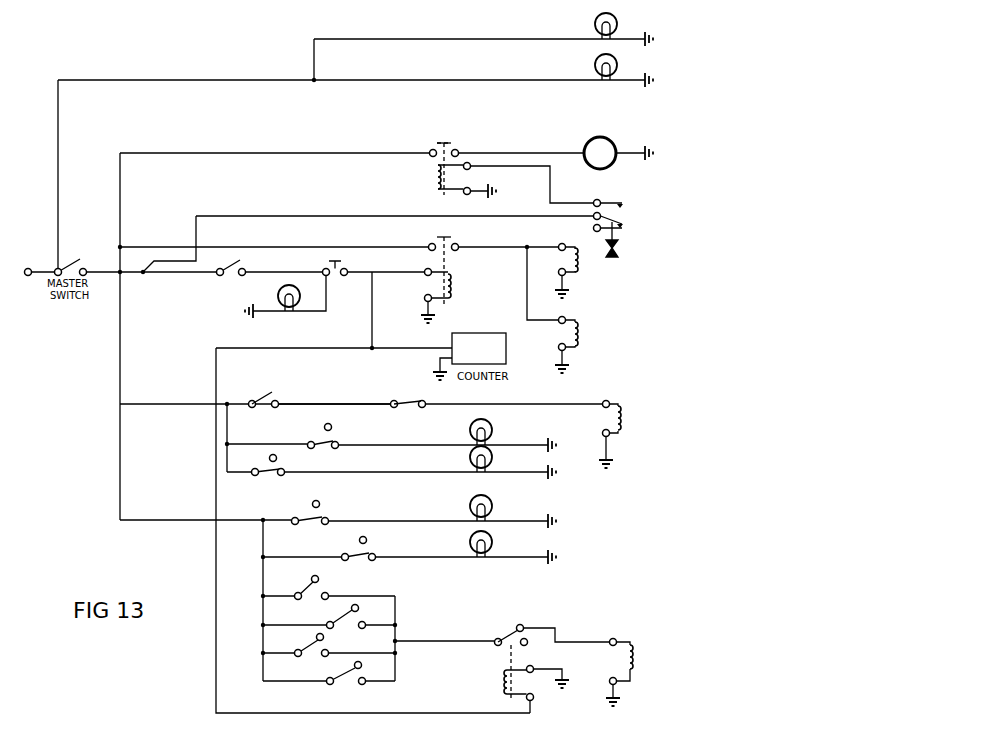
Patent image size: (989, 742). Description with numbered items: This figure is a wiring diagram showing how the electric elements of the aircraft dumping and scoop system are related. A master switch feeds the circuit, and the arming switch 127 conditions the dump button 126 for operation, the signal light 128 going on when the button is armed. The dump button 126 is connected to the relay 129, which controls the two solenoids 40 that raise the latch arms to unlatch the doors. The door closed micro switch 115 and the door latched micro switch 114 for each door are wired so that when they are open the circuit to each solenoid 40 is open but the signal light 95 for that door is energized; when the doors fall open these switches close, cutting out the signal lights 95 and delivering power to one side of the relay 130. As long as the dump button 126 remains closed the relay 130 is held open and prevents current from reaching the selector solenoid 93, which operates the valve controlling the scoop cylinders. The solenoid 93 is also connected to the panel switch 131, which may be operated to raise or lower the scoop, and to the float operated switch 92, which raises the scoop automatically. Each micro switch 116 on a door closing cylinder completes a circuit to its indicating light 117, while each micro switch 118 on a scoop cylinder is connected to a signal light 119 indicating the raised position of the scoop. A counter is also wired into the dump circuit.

The signal lights 95 is at (594, 19).
The switch 131 is at (434, 180).
The arming switch 127 is at (229, 275).
The dump button 126 is at (336, 276).
The signal light 128 is at (290, 312).
The relay 129 is at (458, 290).
The solenoid 40 is at (580, 268).
The switch 92 is at (410, 400).
The solenoid 93 is at (612, 421).
The micro switch 118 is at (325, 438).
The signal light 119 is at (492, 427).
The micro switch 116 is at (352, 553).
The indicating light 117 is at (470, 504).
The door closed micro switch 115 is at (321, 587).
The door latched micro switch 114 is at (340, 619).
The relay 130 is at (503, 685).